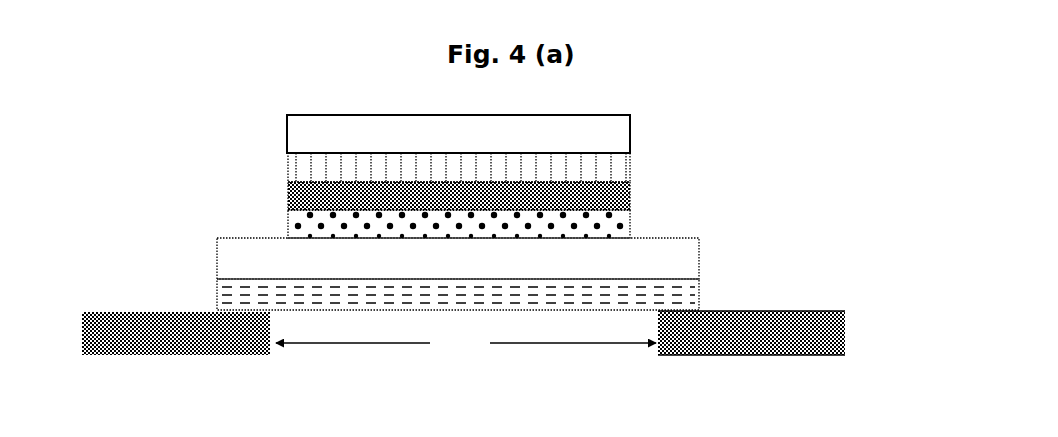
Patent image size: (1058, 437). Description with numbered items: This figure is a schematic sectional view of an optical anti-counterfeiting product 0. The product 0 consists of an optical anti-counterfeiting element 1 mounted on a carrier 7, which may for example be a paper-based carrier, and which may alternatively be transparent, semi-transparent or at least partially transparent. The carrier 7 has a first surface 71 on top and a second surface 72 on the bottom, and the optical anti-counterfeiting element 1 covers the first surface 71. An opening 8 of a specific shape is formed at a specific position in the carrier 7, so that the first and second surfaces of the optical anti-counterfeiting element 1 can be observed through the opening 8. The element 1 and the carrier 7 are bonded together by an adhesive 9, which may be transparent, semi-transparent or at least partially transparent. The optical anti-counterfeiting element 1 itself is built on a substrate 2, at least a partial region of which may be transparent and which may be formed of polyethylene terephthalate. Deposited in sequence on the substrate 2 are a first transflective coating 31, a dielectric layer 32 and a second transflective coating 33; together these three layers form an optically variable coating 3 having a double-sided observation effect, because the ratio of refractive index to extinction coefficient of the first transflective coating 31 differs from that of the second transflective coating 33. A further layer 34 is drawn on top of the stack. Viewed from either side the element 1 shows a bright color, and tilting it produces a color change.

The optical anti-counterfeiting product 0 is at (187, 225).
The optical anti-counterfeiting element 1 is at (529, 216).
The substrate 2 is at (646, 257).
The optically variable coating 3 is at (537, 197).
The first transflective coating 31 is at (621, 225).
The dielectric layer 32 is at (621, 197).
The second transflective coating 33 is at (621, 168).
The electrode / cap layer 34 is at (633, 130).
The carrier 7 is at (501, 325).
The first surface of the carrier 71 is at (800, 308).
The second surface of the carrier 72 is at (795, 358).
The opening 8 is at (466, 357).
The adhesive 9 is at (646, 292).